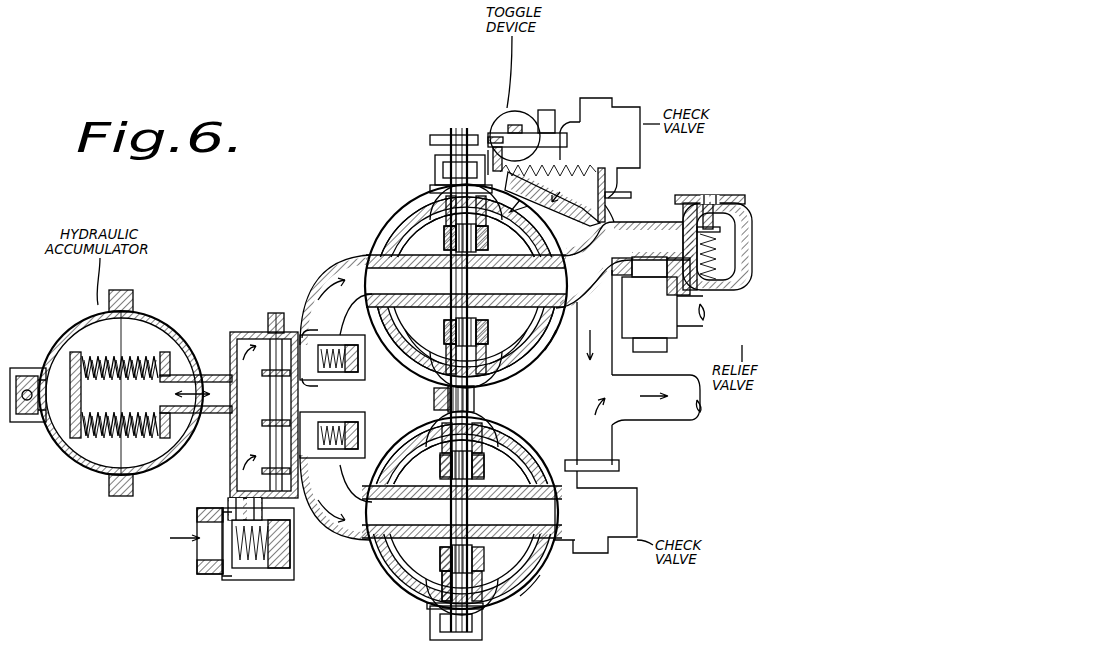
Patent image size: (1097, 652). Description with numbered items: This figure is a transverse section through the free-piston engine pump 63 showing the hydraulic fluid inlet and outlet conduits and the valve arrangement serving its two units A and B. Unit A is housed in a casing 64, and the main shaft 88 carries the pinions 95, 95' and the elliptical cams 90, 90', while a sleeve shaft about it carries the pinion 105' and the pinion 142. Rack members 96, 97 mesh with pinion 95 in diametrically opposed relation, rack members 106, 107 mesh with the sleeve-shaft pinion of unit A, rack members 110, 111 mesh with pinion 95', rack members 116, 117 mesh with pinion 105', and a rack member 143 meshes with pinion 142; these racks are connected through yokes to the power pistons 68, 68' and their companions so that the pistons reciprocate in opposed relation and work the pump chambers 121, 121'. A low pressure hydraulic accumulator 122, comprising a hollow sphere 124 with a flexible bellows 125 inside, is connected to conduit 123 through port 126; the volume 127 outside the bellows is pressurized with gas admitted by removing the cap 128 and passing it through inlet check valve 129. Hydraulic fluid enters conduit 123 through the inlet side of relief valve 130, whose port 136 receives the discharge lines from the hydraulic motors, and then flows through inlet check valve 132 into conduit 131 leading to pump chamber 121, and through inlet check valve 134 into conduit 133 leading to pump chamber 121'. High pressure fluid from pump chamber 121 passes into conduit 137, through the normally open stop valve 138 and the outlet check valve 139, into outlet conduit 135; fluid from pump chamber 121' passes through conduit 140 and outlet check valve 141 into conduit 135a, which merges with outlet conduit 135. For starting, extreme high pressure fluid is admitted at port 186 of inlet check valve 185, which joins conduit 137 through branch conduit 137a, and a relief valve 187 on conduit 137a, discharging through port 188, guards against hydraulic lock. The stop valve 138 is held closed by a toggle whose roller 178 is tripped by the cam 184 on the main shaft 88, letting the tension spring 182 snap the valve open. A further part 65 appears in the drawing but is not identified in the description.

The engine pump 63 is at (390, 190).
The casing 64 is at (520, 376).
The housing ring 65 is at (398, 214).
The power piston 68 is at (459, 322).
The power piston 68' is at (491, 473).
The main shaft 88 is at (460, 130).
The cam 90 is at (445, 170).
The cam 90' is at (430, 622).
The pinion 95 is at (430, 242).
The pinion 95' is at (408, 594).
The rack member 96 is at (418, 242).
The rack member 97 is at (478, 243).
The pinion 105' is at (471, 446).
The rack member 106 is at (505, 350).
The rack member 107 is at (410, 354).
The rack member 110 is at (441, 558).
The rack member 111 is at (505, 558).
The rack member 116 is at (490, 468).
The rack member 117 is at (446, 479).
The pump chamber 121 is at (466, 281).
The pump chamber 121' is at (462, 512).
The low pressure hydraulic accumulator 122 is at (156, 301).
The conduit 123 is at (262, 332).
The hollow sphere 124 is at (178, 310).
The flexible bellows 125 is at (152, 346).
The port 126 is at (210, 410).
The volume 127 is at (176, 342).
The cap 128 is at (20, 368).
The inlet check valve 129 is at (27, 402).
The relief valve 130 is at (276, 588).
The conduit 131 is at (345, 270).
The inlet check valve 132 is at (346, 384).
The conduit 133 is at (330, 536).
The inlet check valve 134 is at (345, 408).
The outlet conduit 135 is at (614, 350).
The conduit 135a is at (616, 456).
The port 136 is at (205, 545).
The conduit 137 is at (566, 260).
The branch conduit 137a is at (650, 218).
The stop valve 138 is at (518, 98).
The outlet check valve 139 is at (617, 91).
The conduit 140 is at (565, 553).
The outlet check valve 141 is at (645, 510).
The pinion 142 is at (476, 396).
The rack member 143 is at (434, 398).
The roller 178 is at (486, 130).
The tension spring 182 is at (563, 168).
The cam 184 is at (432, 136).
The inlet check valve 185 is at (748, 218).
The port 186 is at (712, 200).
The relief valve 187 is at (672, 333).
The discharge port 188 is at (690, 320).
The unit A is at (542, 343).
The unit B is at (528, 611).